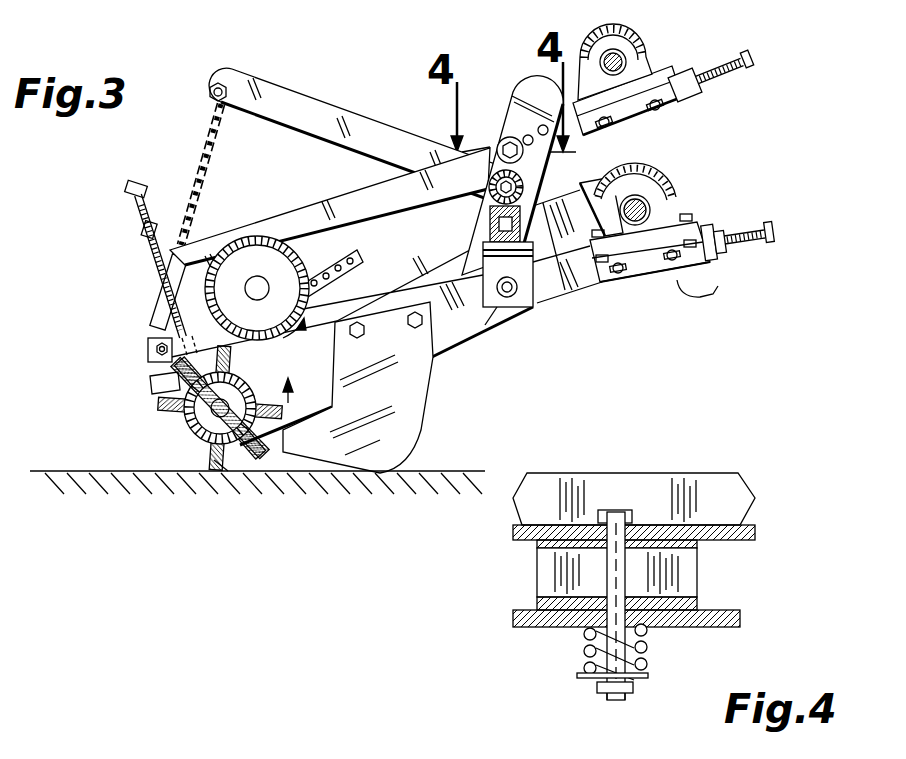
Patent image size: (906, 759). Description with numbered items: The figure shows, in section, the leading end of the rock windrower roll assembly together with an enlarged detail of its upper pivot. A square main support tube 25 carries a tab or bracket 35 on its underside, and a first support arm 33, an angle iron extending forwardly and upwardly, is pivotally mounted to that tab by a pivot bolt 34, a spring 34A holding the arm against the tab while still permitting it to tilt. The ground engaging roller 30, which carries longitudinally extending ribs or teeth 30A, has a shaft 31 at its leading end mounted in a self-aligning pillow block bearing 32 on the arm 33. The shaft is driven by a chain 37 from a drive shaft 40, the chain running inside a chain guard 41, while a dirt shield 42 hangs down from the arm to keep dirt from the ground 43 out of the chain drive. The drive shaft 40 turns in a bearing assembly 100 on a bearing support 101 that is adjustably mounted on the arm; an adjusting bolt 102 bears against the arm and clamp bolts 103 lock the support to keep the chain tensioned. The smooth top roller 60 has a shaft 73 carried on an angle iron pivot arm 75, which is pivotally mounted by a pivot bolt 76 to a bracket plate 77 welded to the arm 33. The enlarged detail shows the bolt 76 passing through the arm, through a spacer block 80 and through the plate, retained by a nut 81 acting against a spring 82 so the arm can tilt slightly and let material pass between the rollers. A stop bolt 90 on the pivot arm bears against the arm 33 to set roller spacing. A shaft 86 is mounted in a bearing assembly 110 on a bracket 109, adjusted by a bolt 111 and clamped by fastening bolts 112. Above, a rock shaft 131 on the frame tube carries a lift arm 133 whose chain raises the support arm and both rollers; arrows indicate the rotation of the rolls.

In FIG. 3, the lift arm 133 is at (278, 95).
In FIG. 3, the stop bolt 90 is at (138, 211).
In FIG. 3, the pivot arm 75 is at (312, 208).
In FIG. 4, the pivot arm 75 is at (706, 482).
In FIG. 3, the chain guard 41 is at (432, 263).
In FIG. 3, the top roller 60 is at (314, 256).
In FIG. 3, the shaft 73 is at (258, 286).
In FIG. 3, the dirt shield 42 is at (419, 396).
In FIG. 3, the first support arm 33 is at (148, 363).
In FIG. 3, the pillow block bearing 32 is at (176, 388).
In FIG. 3, the ground engaging roller 30 is at (206, 435).
In FIG. 3, the ribs or teeth 30A is at (218, 473).
In FIG. 3, the shaft 31 is at (212, 410).
In FIG. 3, the ground 43 is at (453, 471).
In FIG. 3, the bracket plate 77 is at (518, 84).
In FIG. 4, the bracket plate 77 is at (734, 612).
In FIG. 3, the pivot bolt 76 is at (502, 138).
In FIG. 4, the pivot bolt 76 is at (611, 512).
In FIG. 3, the rock shaft 131 is at (490, 184).
In FIG. 3, the main support tube 25 is at (494, 220).
In FIG. 3, the tab or bracket 35 is at (534, 292).
In FIG. 3, the pivot bolt 34 is at (512, 296).
In FIG. 3, the spring 34A is at (500, 308).
In FIG. 3, the bearing assembly 110 is at (662, 64).
In FIG. 3, the bracket 109 is at (646, 123).
In FIG. 3, the shaft 86 is at (617, 45).
In FIG. 3, the fastening bolts 112 is at (692, 106).
In FIG. 3, the bolt 111 is at (715, 63).
In FIG. 3, the bearing assembly 100 is at (680, 208).
In FIG. 3, the clamp bolts 103 is at (677, 279).
In FIG. 3, the bearing support 101 is at (612, 282).
In FIG. 3, the chain 37 is at (607, 182).
In FIG. 3, the drive shaft 40 is at (652, 212).
In FIG. 3, the adjusting bolt 102 is at (748, 230).
In FIG. 4, the spacer block 80 is at (687, 567).
In FIG. 4, the spring 82 is at (587, 652).
In FIG. 4, the nut 81 is at (600, 688).